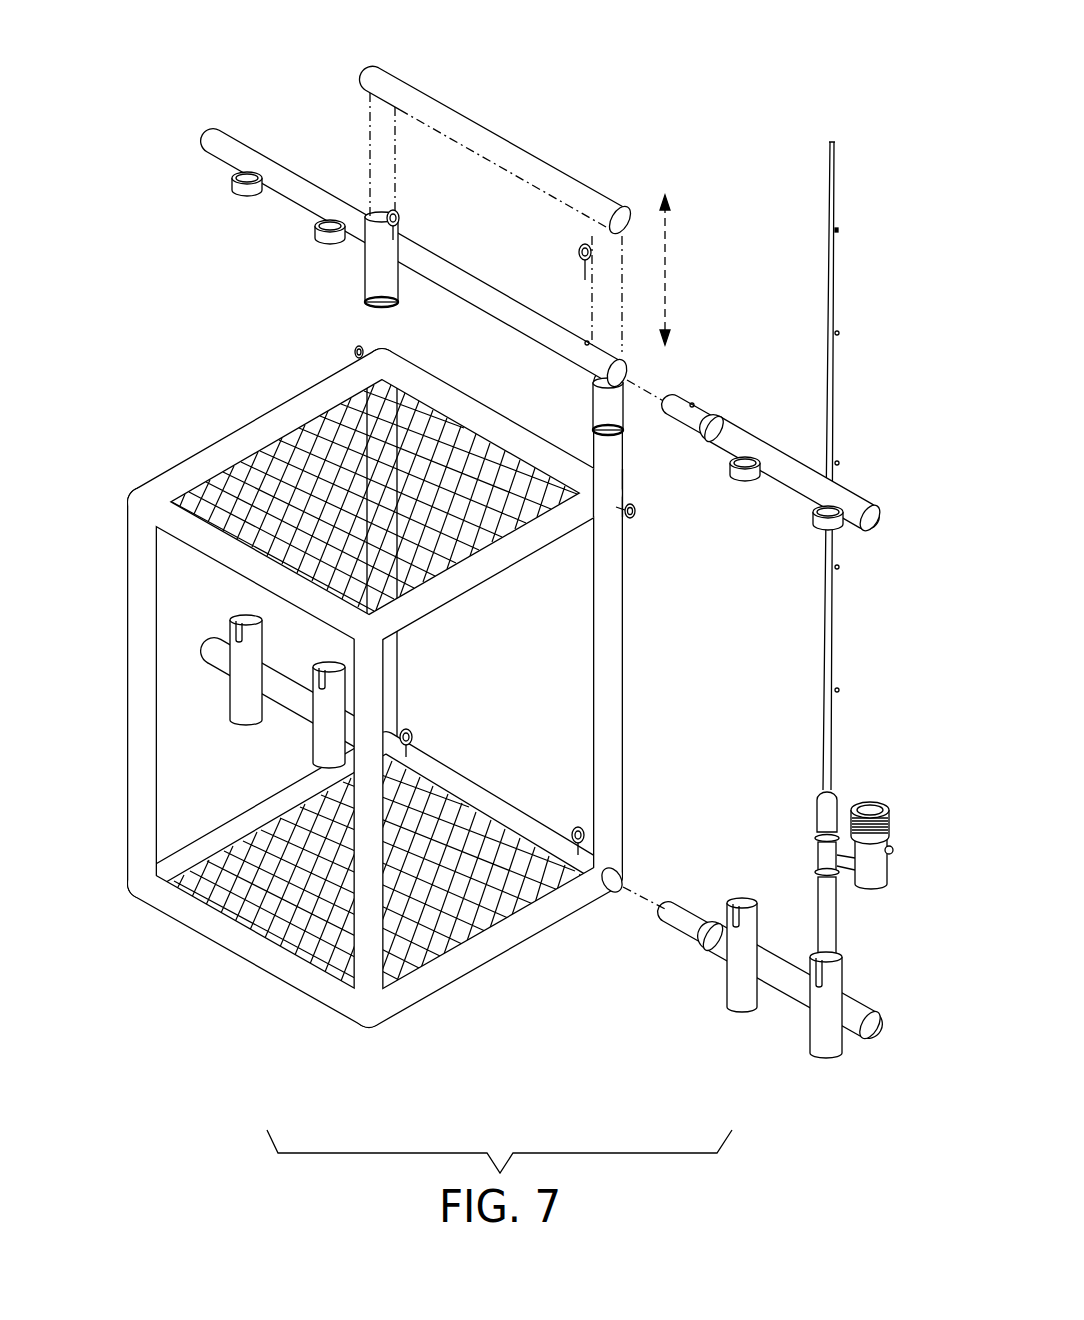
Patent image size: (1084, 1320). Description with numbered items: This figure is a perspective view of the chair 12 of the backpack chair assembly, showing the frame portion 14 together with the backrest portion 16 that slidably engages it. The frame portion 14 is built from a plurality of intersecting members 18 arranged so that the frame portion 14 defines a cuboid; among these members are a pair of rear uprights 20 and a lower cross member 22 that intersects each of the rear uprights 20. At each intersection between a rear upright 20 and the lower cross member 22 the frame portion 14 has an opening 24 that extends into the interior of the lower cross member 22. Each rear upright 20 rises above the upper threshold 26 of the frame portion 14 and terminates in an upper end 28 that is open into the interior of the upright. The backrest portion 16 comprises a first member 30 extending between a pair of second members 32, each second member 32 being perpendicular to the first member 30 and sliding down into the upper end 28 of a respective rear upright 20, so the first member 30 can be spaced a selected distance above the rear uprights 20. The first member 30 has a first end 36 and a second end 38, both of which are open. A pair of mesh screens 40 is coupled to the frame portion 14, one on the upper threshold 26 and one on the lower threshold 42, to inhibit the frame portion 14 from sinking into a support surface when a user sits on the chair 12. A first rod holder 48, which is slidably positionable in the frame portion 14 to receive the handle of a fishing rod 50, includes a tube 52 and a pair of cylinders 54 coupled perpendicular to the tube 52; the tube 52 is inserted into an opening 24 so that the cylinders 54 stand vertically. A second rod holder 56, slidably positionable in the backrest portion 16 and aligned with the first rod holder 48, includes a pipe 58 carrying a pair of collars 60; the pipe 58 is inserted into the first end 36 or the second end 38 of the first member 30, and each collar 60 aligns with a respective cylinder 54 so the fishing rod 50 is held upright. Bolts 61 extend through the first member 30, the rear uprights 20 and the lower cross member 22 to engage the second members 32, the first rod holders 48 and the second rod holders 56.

The chair 12 is at (275, 395).
The frame portion 14 is at (130, 474).
The backrest portion 16 is at (632, 345).
The intersecting members 18 is at (233, 427).
The rear uprights 20 is at (448, 665).
The lower cross member 22 is at (525, 810).
The openings 24 is at (640, 866).
The upper threshold 26 is at (447, 255).
The upper end 28 is at (510, 312).
The first member 30 is at (475, 382).
The second members 32 is at (365, 264).
The first end 36 is at (363, 207).
The second end 38 is at (627, 373).
The mesh screens 40 is at (228, 498).
The lower threshold 42 is at (470, 995).
The first rod holders 48 is at (200, 693).
The fishing rod 50 is at (840, 722).
The tube 52 is at (783, 993).
The cylinders 54 is at (733, 985).
The second rod holders 56 is at (525, 305).
The pipe 58 is at (215, 145).
The collars 60 is at (232, 187).
The bolts 61 is at (584, 243).